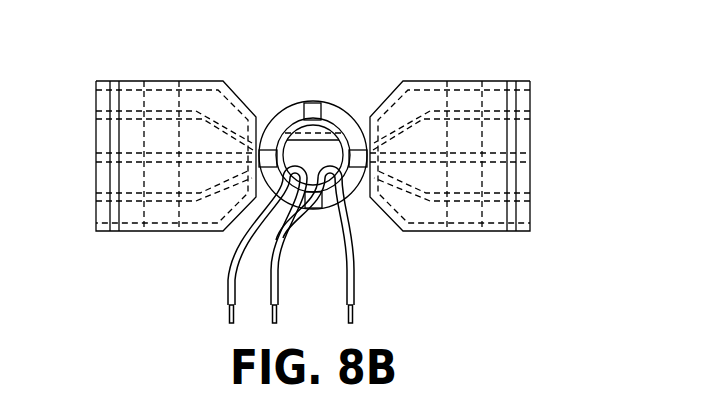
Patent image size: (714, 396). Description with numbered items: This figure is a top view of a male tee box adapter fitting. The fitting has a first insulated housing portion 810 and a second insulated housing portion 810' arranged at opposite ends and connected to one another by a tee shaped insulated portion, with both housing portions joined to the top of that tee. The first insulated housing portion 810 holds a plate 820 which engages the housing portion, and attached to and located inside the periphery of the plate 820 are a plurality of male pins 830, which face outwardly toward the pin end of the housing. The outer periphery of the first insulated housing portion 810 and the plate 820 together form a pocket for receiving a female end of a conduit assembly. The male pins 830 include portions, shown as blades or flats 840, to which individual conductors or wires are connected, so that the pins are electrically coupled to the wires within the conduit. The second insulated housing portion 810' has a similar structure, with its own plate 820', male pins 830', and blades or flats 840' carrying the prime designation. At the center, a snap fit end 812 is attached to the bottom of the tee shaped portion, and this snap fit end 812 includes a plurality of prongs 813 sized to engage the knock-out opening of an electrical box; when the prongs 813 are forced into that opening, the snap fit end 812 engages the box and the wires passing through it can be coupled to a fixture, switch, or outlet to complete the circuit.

The first insulated housing portion 810 is at (176, 187).
The plate 820 is at (77, 174).
The male pins 830 is at (84, 156).
The blades or flats 840 is at (158, 118).
The snap fit end 812 is at (295, 128).
The prongs 813 is at (325, 112).
The second insulated housing portion 810' is at (450, 174).
The plate 820' is at (546, 177).
The male pins 830' is at (550, 153).
The blades or flats 840' is at (476, 118).